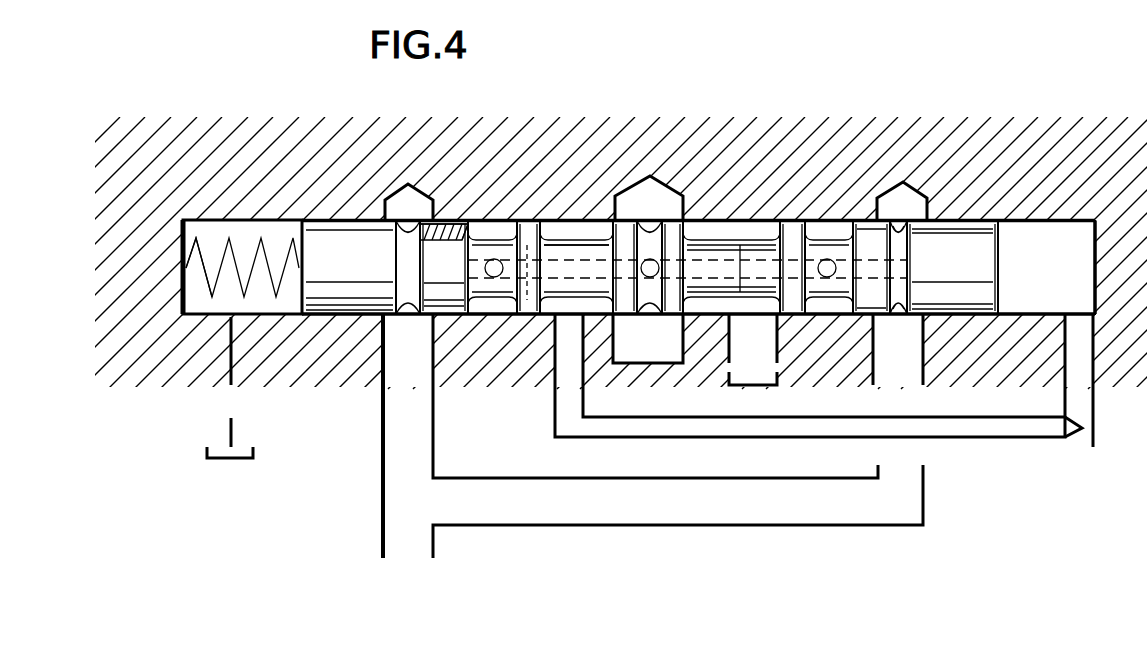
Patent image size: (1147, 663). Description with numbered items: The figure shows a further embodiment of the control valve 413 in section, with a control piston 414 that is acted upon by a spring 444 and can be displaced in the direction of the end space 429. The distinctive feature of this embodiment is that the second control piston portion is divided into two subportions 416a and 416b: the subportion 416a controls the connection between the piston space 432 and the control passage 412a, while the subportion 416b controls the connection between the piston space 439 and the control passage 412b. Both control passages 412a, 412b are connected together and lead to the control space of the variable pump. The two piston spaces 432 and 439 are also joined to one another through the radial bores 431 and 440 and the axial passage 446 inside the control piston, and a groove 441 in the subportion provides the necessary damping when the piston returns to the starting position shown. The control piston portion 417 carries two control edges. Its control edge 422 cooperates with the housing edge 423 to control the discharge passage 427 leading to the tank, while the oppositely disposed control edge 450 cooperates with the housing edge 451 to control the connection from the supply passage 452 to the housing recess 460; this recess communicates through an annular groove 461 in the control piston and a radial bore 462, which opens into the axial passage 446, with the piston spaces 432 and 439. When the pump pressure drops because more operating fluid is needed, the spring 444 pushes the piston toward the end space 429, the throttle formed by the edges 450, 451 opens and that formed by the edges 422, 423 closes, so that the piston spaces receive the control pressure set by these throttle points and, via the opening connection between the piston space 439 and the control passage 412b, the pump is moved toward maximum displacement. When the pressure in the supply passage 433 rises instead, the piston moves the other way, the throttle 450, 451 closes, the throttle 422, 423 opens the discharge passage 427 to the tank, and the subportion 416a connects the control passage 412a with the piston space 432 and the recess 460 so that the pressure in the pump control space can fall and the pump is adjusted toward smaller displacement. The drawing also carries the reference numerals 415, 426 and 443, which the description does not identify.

The control valve 413 is at (213, 213).
The control piston 414 is at (310, 236).
The valve spool 415 is at (358, 256).
The subportion 416a is at (438, 253).
The subportion 416b is at (953, 238).
The groove 441 is at (462, 232).
The piston space 432 is at (497, 228).
The radial bore 431 is at (493, 277).
The axial passage 446 is at (527, 302).
The control edge 450 is at (610, 248).
The housing edge 451 is at (620, 250).
The annular groove 461 is at (650, 232).
The radial bore 462 is at (650, 277).
The control edge 422 is at (673, 287).
The housing edge 423 is at (698, 212).
The control piston portion 417 is at (717, 250).
The radial bore 426 is at (755, 262).
The piston space 439 is at (837, 228).
The radial bore 440 is at (827, 277).
The end space 429 is at (1038, 240).
The drain line 443 is at (195, 303).
The spring 444 is at (283, 303).
The housing recess 460 is at (627, 343).
The discharge passage 427 is at (770, 335).
The control passage 412a is at (383, 494).
The control passage 412b is at (908, 378).
The supply passage 452 is at (568, 420).
The supply passage 433 is at (1062, 440).